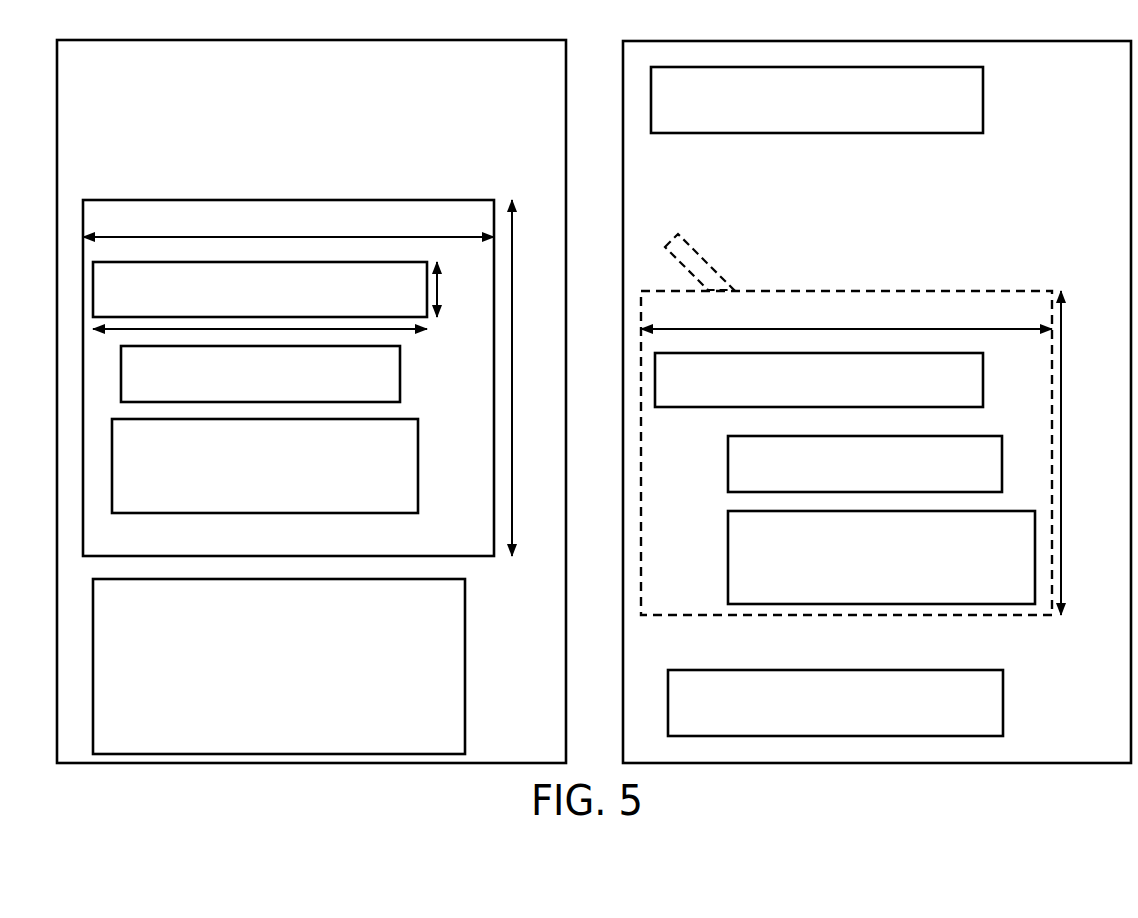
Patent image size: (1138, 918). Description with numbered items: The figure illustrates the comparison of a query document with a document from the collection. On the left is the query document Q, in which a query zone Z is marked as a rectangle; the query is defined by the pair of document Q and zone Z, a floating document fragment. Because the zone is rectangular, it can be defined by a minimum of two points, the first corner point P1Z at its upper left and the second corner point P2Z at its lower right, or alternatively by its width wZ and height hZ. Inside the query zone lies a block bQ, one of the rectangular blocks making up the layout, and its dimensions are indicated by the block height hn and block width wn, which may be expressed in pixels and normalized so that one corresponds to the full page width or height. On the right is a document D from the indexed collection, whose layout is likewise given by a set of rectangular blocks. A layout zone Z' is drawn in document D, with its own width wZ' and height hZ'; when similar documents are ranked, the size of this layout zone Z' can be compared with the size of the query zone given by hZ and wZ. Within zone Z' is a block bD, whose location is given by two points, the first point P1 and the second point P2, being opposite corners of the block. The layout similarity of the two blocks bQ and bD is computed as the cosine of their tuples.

The query document Q is at (539, 250).
The query zone Z is at (288, 346).
The first corner point of query zone P1Z is at (84, 198).
The second corner point of query zone P2Z is at (495, 560).
The width of query zone wZ is at (288, 197).
The height of query zone hZ is at (556, 378).
The block of query zone bQ is at (260, 289).
The block height hn is at (438, 290).
The block width wn is at (400, 330).
The collection document D is at (1094, 165).
The layout zone Z' is at (846, 421).
The width of layout zone wZ' is at (846, 289).
The height of layout zone hZ' is at (1092, 453).
The block of collection document bD is at (819, 380).
The first corner point of block P1 is at (727, 510).
The second corner point of block P2 is at (1030, 611).